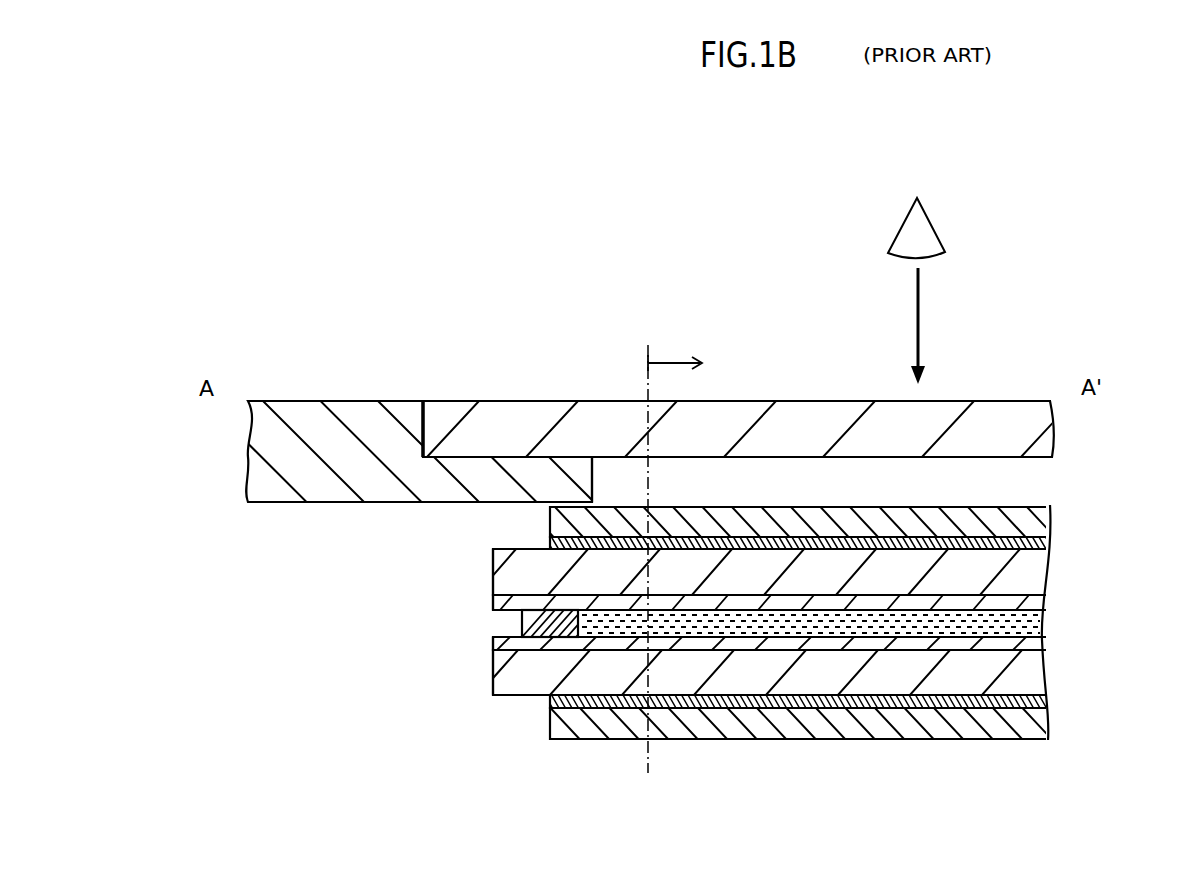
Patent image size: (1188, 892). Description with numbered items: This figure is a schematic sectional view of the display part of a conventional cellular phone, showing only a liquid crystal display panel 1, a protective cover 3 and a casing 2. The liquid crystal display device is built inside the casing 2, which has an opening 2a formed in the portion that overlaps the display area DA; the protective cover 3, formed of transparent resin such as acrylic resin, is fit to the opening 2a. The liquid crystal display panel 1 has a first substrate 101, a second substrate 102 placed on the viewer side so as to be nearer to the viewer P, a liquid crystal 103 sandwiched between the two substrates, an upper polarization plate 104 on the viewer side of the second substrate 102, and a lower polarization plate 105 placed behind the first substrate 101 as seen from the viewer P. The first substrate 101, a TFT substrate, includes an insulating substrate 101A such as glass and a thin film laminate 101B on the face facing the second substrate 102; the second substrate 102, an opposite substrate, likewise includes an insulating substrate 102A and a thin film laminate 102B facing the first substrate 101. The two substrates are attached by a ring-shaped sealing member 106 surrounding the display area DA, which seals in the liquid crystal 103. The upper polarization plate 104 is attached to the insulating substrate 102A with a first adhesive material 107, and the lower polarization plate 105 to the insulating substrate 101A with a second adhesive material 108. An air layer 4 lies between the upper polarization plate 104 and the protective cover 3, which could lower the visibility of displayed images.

The liquid crystal display panel 1 is at (1067, 507).
The casing 2 is at (350, 450).
The opening 2a is at (575, 484).
The protective cover 3 is at (540, 420).
The air layer 4 is at (766, 468).
The first substrate 101 is at (478, 638).
The insulating substrate 101A is at (819, 673).
The thin film laminate 101B is at (853, 645).
The second substrate 102 is at (478, 550).
The insulating substrate 102A is at (853, 565).
The thin film laminate 102B is at (817, 600).
The liquid crystal 103 is at (955, 620).
The upper polarization plate 104 is at (962, 522).
The lower polarization plate 105 is at (723, 722).
The sealing member 106 is at (537, 640).
The first adhesive material 107 is at (1002, 540).
The second adhesive material 108 is at (592, 713).
The viewer P is at (939, 204).
The display area DA is at (675, 549).